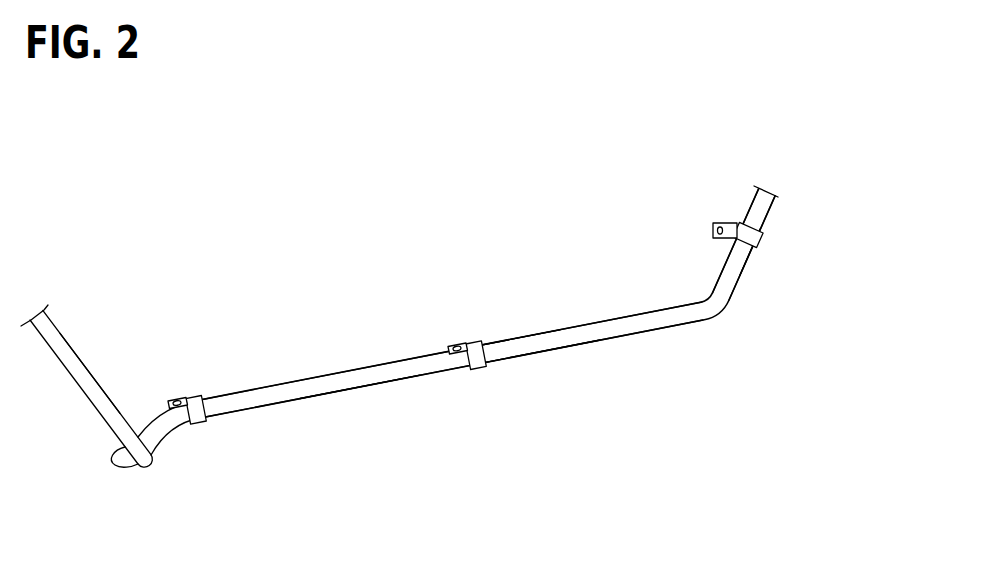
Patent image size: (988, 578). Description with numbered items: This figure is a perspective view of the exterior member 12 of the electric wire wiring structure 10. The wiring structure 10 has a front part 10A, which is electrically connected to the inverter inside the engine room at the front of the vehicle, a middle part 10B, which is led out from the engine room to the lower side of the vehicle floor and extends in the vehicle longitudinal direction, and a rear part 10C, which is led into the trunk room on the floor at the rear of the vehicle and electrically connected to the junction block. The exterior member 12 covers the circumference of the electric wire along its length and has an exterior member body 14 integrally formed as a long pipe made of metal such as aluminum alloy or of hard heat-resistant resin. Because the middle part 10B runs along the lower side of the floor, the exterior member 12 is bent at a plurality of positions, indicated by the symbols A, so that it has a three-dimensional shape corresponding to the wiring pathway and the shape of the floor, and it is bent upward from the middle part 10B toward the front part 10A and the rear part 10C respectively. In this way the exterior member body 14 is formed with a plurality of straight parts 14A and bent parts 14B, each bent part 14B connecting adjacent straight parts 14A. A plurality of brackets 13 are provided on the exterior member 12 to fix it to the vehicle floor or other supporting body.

The electric wire wiring structure 10 is at (457, 418).
The front part 10A is at (47, 321).
The middle part 10B is at (388, 363).
The rear part 10C is at (757, 193).
The exterior member 12 is at (510, 312).
The bracket 13 is at (196, 398).
The exterior member body 14 is at (540, 337).
The straight part 14A is at (91, 381).
The bent part 14B is at (153, 412).
The bending position A is at (97, 436).